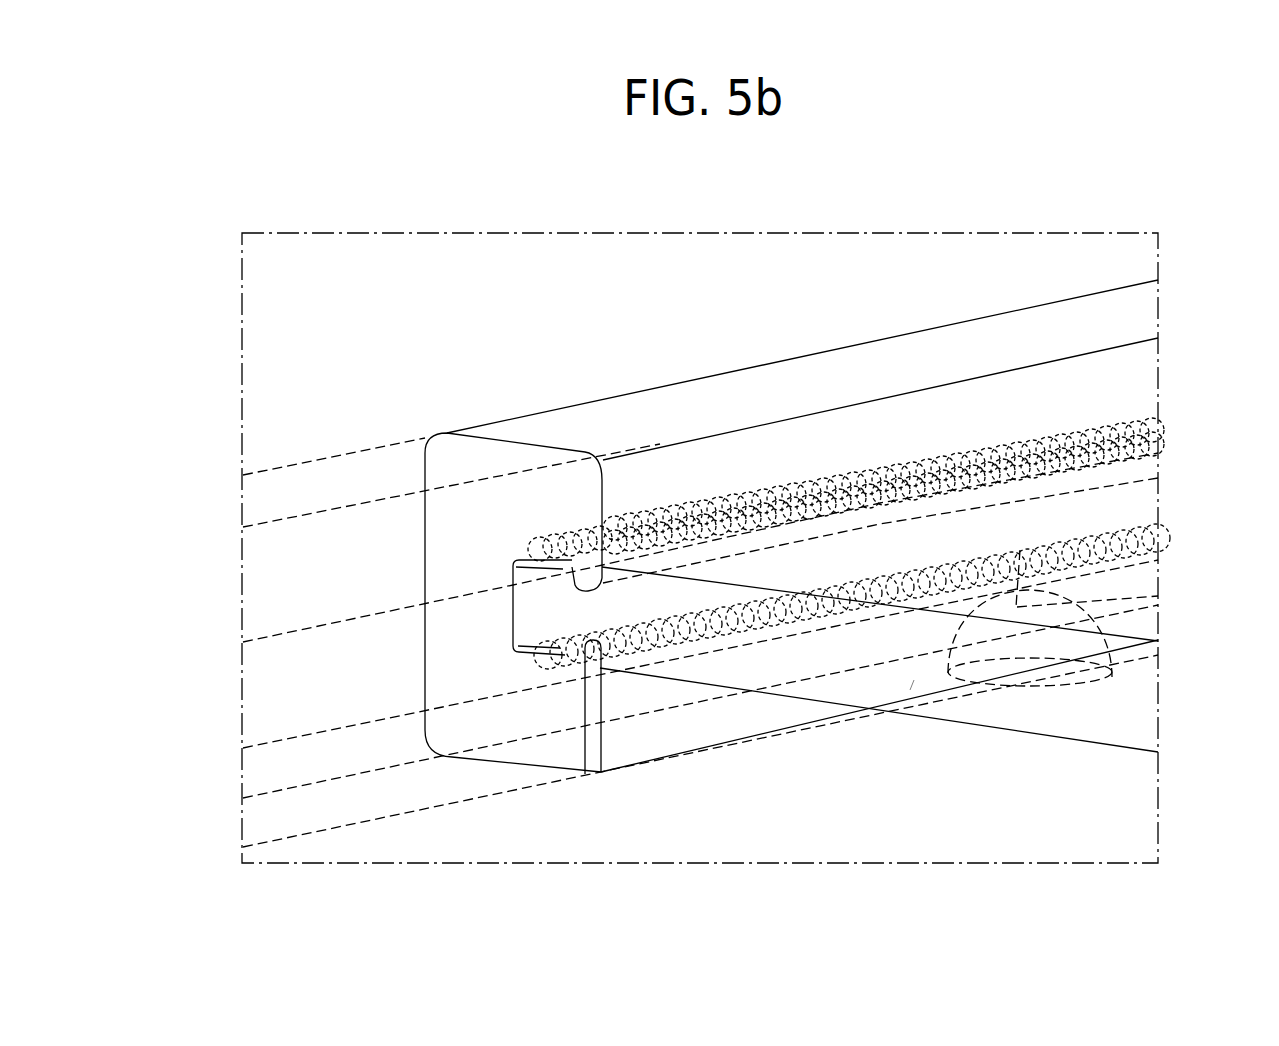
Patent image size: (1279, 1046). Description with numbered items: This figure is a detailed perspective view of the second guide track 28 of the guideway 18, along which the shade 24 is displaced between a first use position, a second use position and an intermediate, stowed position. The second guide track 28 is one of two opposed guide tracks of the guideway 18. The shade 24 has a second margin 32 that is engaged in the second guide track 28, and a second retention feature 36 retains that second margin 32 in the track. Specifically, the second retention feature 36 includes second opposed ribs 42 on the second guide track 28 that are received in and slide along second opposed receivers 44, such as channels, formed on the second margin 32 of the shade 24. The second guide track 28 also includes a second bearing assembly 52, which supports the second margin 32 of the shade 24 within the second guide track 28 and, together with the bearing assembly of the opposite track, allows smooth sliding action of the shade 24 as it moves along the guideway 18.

The guideway 18 is at (421, 418).
The shade 24 is at (913, 683).
The second guide track 28 is at (530, 557).
The second margin 32 is at (537, 613).
The second retention feature 36 is at (567, 744).
The second opposed ribs 42 is at (597, 583).
The second opposed receivers 44 is at (586, 588).
The second bearing assembly 52 is at (1130, 540).